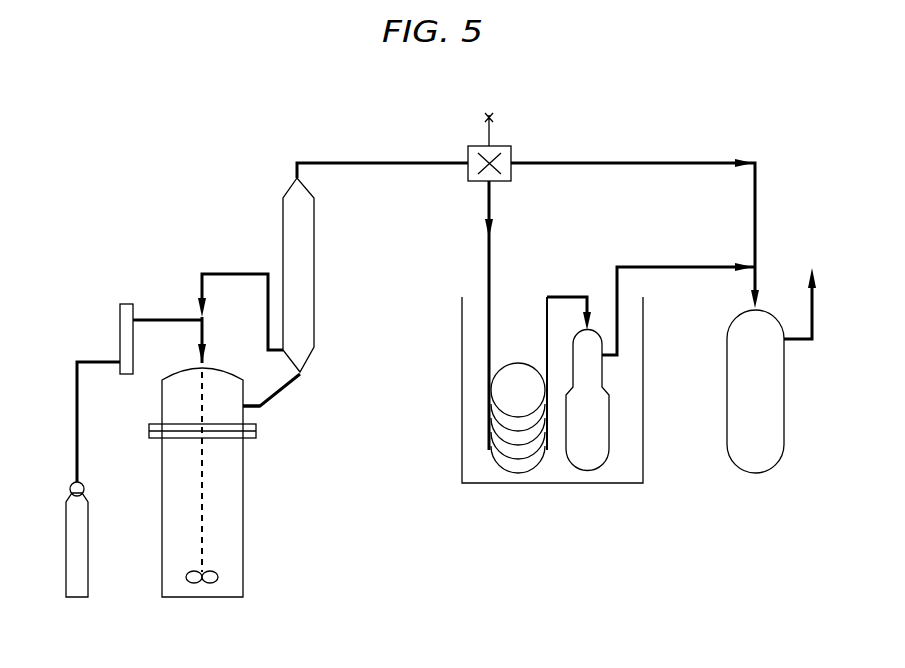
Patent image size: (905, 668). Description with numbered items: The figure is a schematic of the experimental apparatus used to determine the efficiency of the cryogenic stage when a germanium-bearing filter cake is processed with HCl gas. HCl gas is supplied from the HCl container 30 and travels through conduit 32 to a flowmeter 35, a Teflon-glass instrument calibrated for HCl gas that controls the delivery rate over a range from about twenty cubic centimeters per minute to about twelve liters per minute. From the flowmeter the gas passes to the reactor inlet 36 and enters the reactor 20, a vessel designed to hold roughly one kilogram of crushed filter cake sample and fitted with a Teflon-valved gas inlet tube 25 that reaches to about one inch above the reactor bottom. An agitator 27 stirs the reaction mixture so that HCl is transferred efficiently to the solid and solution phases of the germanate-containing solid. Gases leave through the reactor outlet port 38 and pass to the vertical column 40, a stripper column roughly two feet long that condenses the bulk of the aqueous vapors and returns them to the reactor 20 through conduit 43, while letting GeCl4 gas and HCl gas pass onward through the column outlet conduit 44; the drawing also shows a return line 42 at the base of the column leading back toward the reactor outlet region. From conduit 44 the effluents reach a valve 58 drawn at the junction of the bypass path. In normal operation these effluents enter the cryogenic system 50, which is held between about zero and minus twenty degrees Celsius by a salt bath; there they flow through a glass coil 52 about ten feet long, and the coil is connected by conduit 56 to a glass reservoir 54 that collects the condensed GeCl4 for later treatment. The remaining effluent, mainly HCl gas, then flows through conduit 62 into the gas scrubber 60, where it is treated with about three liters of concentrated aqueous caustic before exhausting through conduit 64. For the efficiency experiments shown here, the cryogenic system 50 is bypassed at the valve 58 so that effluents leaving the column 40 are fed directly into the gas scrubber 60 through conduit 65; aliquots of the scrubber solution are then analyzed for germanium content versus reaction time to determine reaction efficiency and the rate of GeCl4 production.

The reactor 20 is at (243, 565).
The gas inlet tube 25 is at (205, 500).
The agitator 27 is at (193, 582).
The HCl container 30 is at (66, 548).
The conduit 32 is at (77, 425).
The flowmeter 35 is at (120, 330).
The reactor inlet 36 is at (205, 364).
The reactor outlet port 38 is at (250, 408).
The vertical column 40 is at (314, 278).
The return line 42 is at (302, 380).
The conduit 43 is at (228, 273).
The column outlet conduit 44 is at (378, 160).
The cryogenic system 50 is at (558, 485).
The glass coil 52 is at (492, 424).
The glass reservoir 54 is at (598, 436).
The conduit 56 is at (567, 296).
The valve 58 is at (511, 170).
The gas scrubber 60 is at (785, 425).
The conduit 62 is at (676, 265).
The conduit 64 is at (815, 316).
The conduit 65 is at (645, 160).